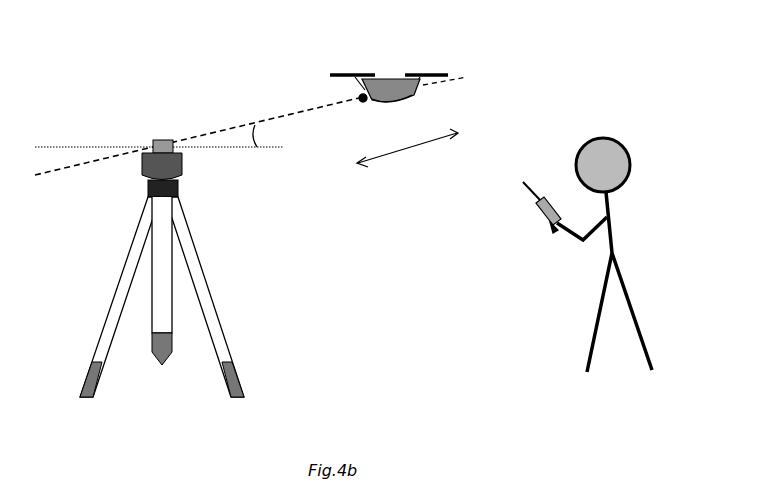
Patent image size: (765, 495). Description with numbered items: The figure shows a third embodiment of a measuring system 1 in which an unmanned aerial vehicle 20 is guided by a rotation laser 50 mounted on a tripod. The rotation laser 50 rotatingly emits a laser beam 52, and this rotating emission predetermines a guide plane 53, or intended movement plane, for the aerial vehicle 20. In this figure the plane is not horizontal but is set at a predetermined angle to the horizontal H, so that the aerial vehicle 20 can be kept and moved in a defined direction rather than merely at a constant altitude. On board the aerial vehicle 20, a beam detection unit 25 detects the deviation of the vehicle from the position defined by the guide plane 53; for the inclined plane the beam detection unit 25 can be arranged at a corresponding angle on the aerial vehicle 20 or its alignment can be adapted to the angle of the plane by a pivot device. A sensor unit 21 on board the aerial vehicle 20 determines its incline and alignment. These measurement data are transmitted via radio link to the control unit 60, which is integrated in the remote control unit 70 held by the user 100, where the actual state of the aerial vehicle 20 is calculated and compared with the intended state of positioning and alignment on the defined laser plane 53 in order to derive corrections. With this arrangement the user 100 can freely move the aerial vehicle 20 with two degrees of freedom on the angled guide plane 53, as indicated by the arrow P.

The measuring system 1 is at (92, 57).
The horizontal H is at (73, 145).
The laser beam 52 is at (230, 130).
The rotation laser 50 is at (160, 130).
The unmanned aerial vehicle 20 is at (402, 52).
The guide plane 53 is at (467, 77).
The sensor unit 21 is at (395, 102).
The beam detection unit 25 is at (367, 102).
The arrow P is at (403, 152).
The user 100 is at (613, 123).
The remote control unit 70 is at (540, 213).
The control unit 60 is at (552, 235).